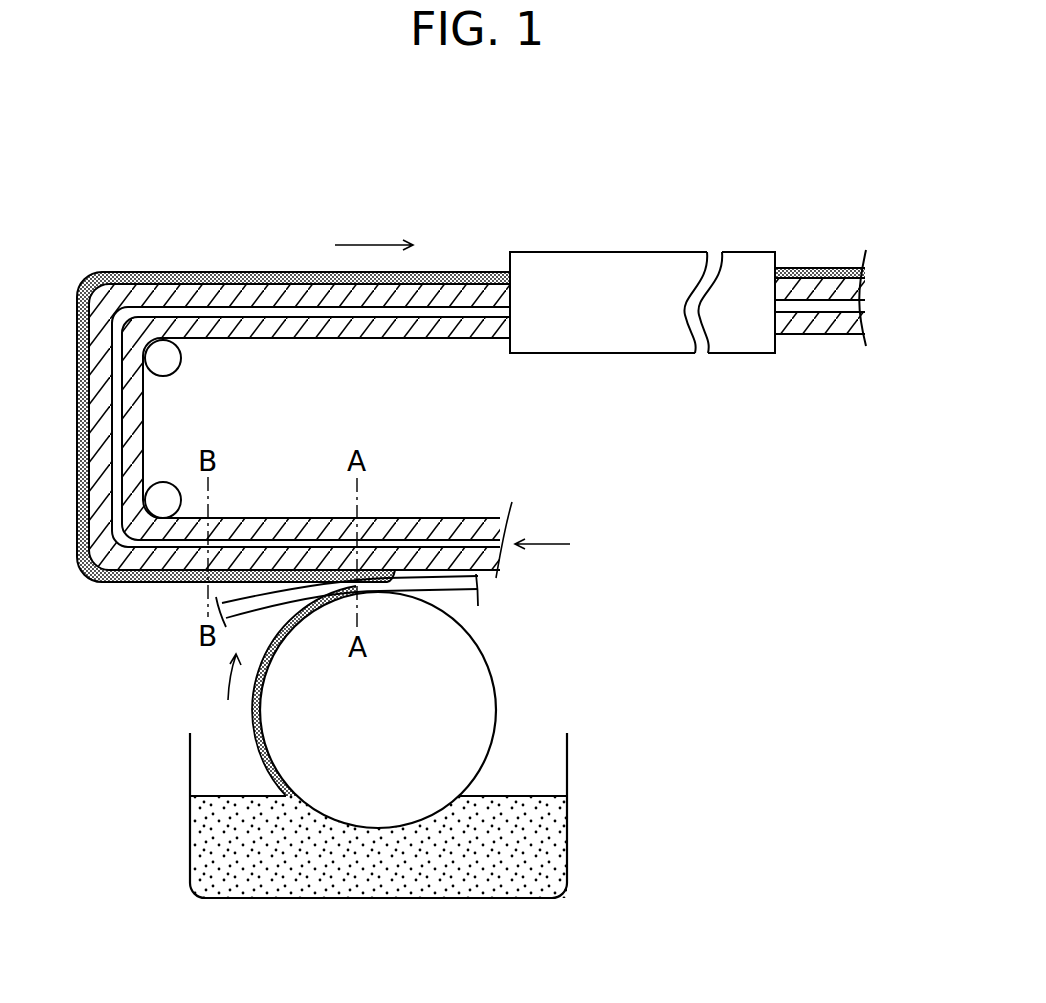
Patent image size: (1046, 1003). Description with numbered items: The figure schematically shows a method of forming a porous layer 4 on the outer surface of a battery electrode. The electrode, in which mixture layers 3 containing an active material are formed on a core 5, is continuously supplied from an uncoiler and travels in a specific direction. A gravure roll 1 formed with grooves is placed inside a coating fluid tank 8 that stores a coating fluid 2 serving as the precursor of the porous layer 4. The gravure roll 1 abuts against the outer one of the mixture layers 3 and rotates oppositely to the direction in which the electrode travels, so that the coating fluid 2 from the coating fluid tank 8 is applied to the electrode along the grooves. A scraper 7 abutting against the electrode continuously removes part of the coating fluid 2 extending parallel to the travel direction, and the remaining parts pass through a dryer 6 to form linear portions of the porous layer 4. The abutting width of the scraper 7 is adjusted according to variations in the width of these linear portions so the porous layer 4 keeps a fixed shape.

The gravure roll 1 is at (480, 702).
The coating fluid 2 is at (532, 847).
The mixture layers 3 is at (420, 522).
The porous layer 4 is at (827, 268).
The core 5 is at (340, 310).
The dryer 6 is at (600, 267).
The scraper 7 is at (473, 590).
The coating fluid tank 8 is at (490, 897).